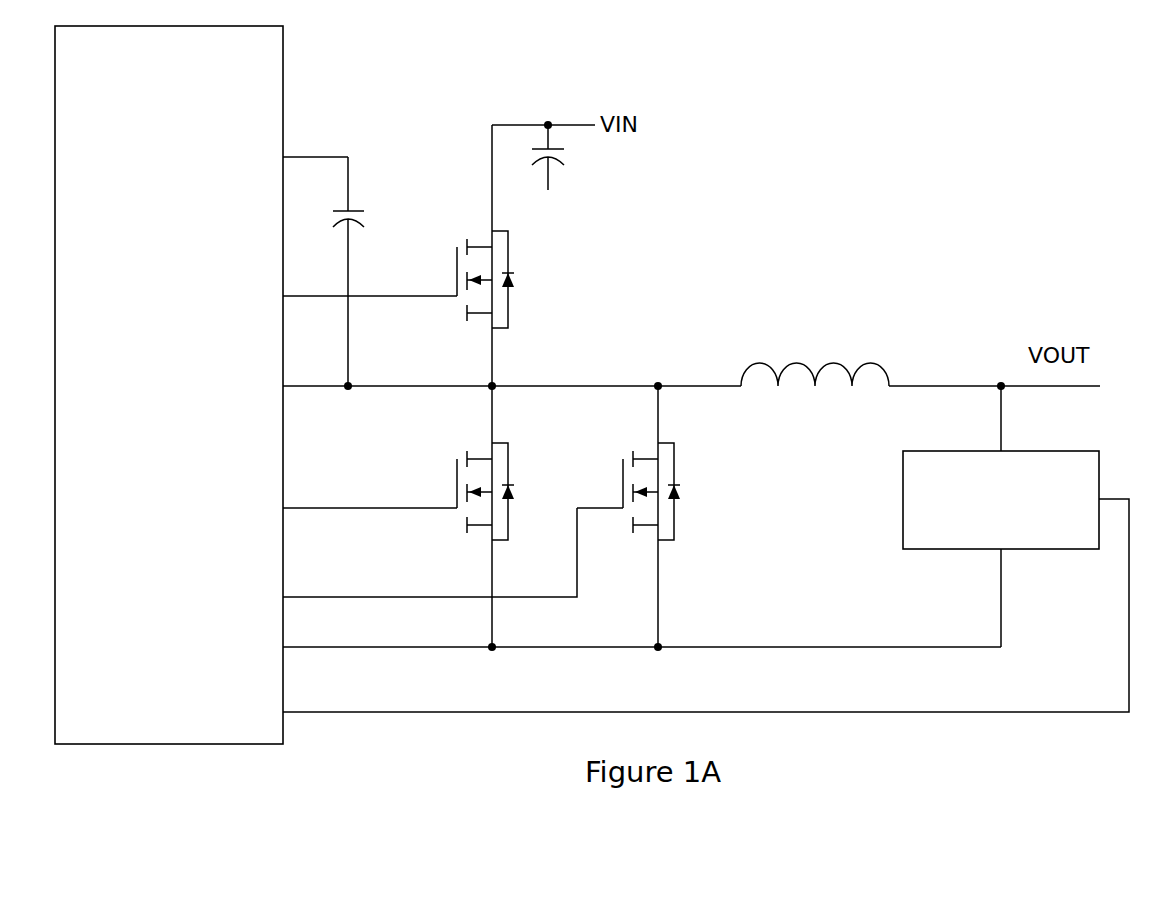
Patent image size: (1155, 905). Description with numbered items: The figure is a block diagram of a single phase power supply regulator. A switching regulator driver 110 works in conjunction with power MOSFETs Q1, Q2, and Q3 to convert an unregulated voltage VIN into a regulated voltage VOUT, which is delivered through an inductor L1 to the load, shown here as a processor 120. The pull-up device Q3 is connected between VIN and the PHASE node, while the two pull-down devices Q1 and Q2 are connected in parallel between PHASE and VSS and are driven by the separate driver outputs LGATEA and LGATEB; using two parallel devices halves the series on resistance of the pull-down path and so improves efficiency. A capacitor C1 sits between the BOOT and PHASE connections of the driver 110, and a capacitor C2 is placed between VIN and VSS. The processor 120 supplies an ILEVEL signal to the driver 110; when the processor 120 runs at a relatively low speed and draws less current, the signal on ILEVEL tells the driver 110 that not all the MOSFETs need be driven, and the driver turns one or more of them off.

The switching regulator driver 110 is at (169, 385).
The processor 120 is at (1001, 500).
The capacitor C1 is at (374, 271).
The capacitor C2 is at (568, 171).
The power MOSFET Q1 is at (506, 491).
The power MOSFET Q2 is at (673, 491).
The power MOSFET Q3 is at (508, 279).
The inductor L1 is at (815, 353).